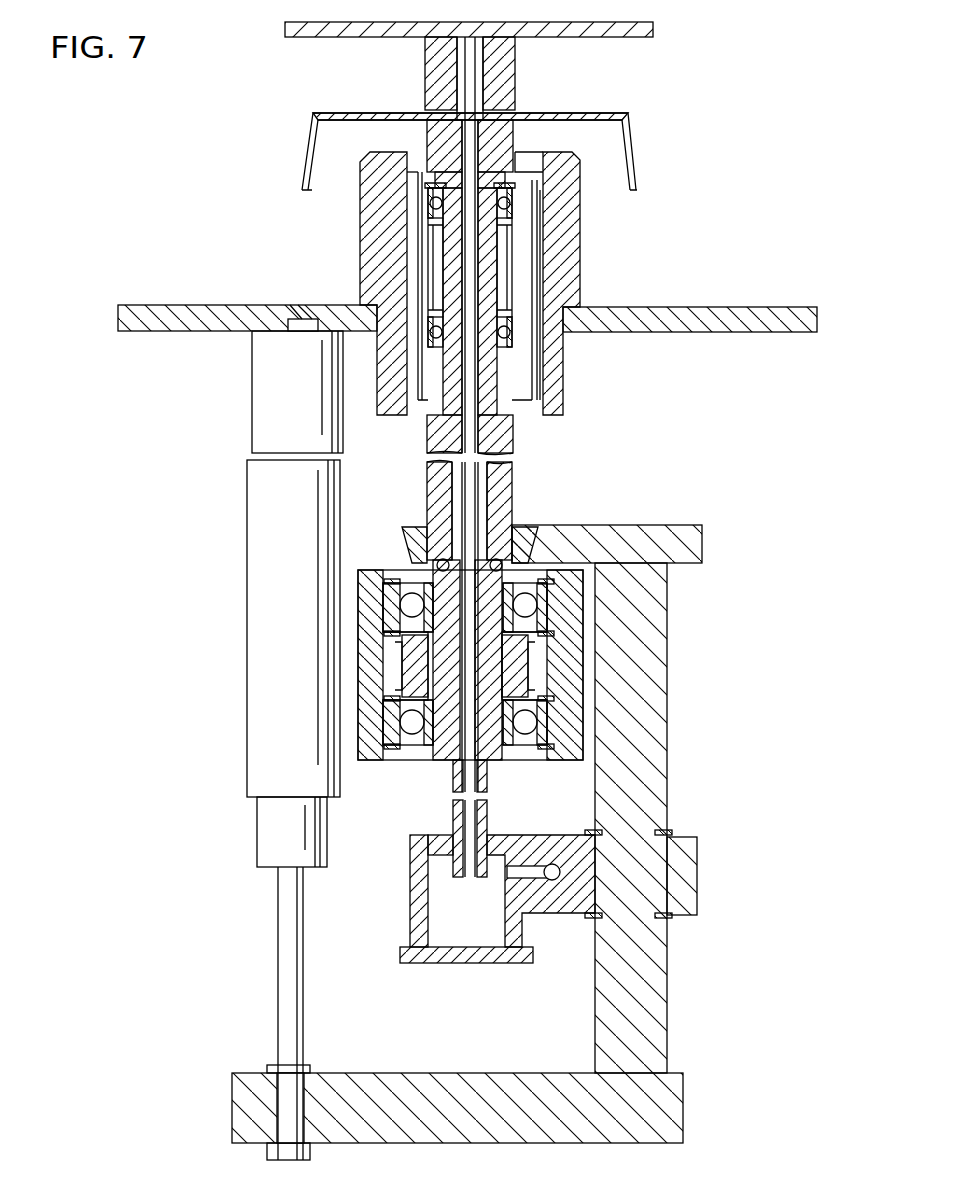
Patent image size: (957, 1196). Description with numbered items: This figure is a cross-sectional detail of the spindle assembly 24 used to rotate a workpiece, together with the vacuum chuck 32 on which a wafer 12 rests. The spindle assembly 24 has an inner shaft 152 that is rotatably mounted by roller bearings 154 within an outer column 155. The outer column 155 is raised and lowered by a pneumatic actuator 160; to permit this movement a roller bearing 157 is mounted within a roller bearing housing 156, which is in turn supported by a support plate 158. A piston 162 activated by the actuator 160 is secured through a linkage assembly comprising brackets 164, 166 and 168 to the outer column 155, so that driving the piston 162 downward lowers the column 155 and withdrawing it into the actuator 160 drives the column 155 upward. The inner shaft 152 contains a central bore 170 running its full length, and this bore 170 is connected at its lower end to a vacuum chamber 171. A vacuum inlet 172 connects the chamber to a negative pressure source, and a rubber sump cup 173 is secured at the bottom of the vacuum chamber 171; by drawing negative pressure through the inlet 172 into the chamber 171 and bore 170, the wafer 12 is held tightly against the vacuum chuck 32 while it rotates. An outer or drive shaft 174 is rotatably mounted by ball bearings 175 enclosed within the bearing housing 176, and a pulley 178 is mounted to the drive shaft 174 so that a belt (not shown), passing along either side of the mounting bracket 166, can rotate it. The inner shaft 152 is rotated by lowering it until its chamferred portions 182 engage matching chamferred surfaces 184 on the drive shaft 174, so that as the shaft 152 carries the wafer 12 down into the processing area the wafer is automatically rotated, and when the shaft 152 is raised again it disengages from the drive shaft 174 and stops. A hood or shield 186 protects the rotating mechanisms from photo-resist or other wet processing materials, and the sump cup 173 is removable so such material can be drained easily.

The wafer 12 is at (650, 22).
The spindle assembly 24 is at (641, 462).
The vacuum chuck 32 is at (515, 70).
The inner shaft 152 is at (482, 430).
The roller bearings 154 is at (512, 200).
The outer column 155 is at (512, 505).
The roller bearing housing 156 is at (580, 272).
The roller bearing 157 is at (532, 227).
The support plate 158 is at (183, 305).
The pneumatic actuator 160 is at (247, 603).
The piston 162 is at (277, 1002).
The bracket 164 is at (497, 1145).
The mounting bracket 166 is at (667, 1003).
The bracket 168 is at (603, 525).
The central bore 170 is at (465, 72).
The vacuum chamber 171 is at (440, 897).
The vacuum inlet 172 is at (552, 864).
The rubber sump cup 173 is at (519, 963).
The drive shaft 174 is at (443, 762).
The ball bearings 175 is at (388, 583).
The bearing housing 176 is at (358, 588).
The pulley 178 is at (538, 668).
The chamferred portions 182 is at (408, 525).
The chamferred surfaces 184 is at (437, 565).
The hood or shield 186 is at (636, 152).